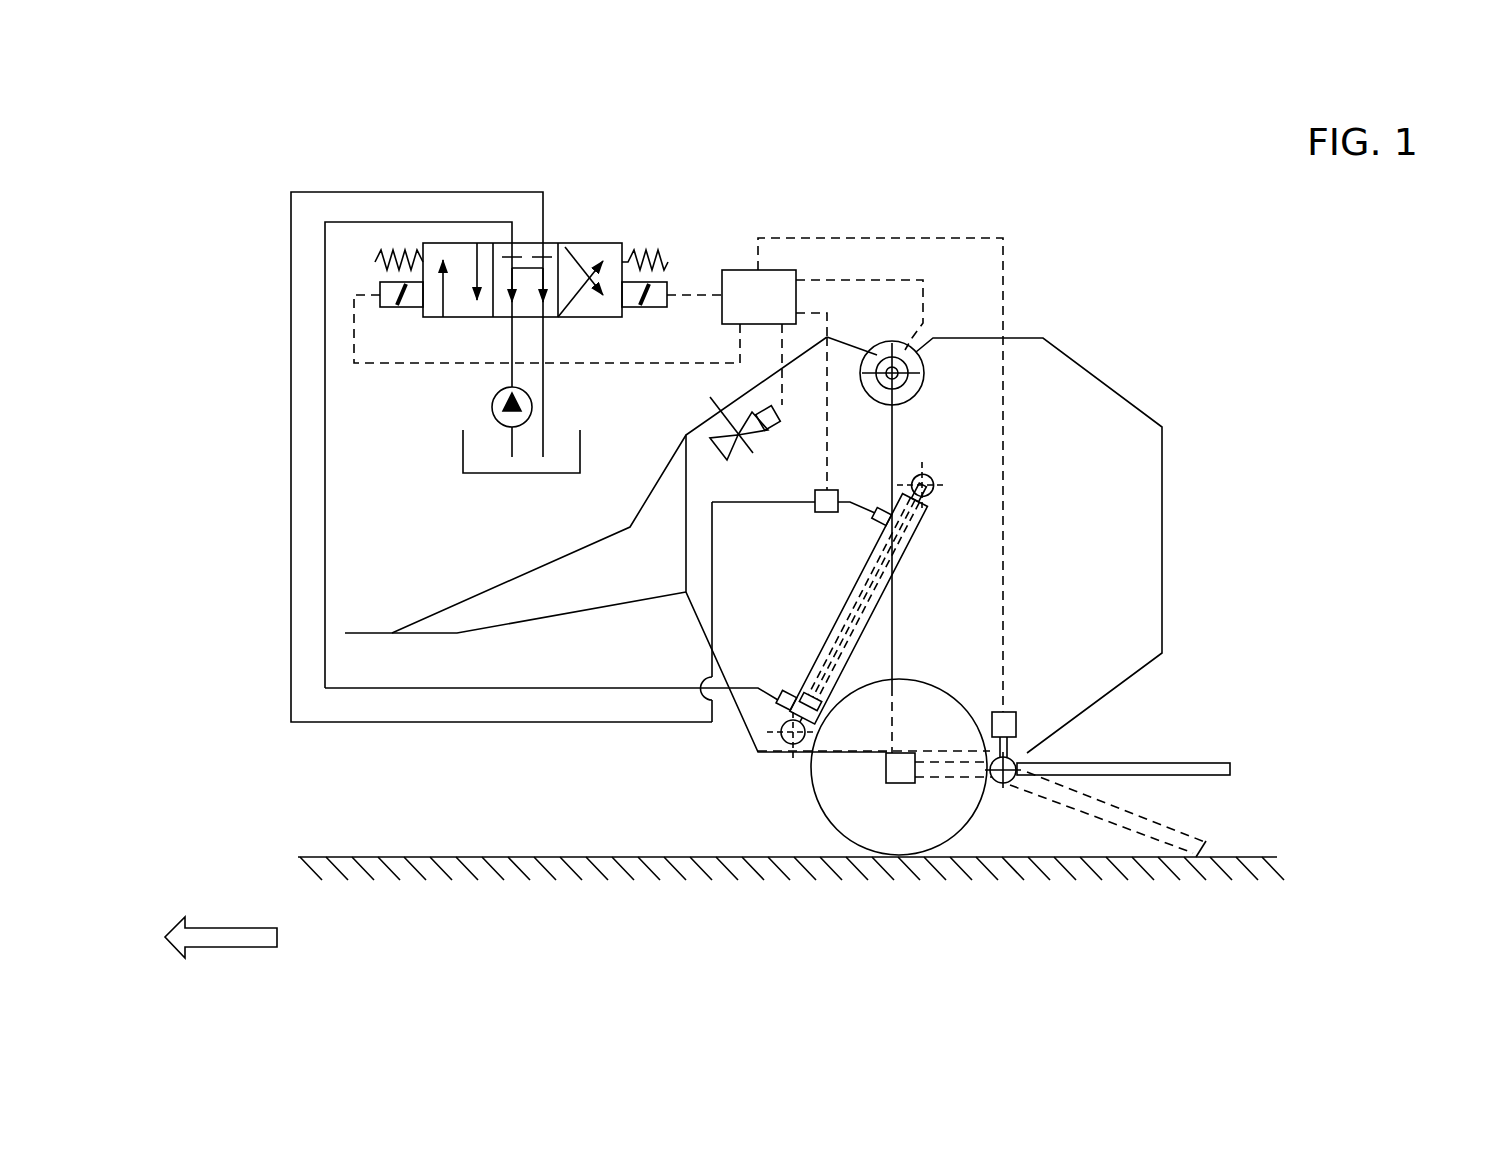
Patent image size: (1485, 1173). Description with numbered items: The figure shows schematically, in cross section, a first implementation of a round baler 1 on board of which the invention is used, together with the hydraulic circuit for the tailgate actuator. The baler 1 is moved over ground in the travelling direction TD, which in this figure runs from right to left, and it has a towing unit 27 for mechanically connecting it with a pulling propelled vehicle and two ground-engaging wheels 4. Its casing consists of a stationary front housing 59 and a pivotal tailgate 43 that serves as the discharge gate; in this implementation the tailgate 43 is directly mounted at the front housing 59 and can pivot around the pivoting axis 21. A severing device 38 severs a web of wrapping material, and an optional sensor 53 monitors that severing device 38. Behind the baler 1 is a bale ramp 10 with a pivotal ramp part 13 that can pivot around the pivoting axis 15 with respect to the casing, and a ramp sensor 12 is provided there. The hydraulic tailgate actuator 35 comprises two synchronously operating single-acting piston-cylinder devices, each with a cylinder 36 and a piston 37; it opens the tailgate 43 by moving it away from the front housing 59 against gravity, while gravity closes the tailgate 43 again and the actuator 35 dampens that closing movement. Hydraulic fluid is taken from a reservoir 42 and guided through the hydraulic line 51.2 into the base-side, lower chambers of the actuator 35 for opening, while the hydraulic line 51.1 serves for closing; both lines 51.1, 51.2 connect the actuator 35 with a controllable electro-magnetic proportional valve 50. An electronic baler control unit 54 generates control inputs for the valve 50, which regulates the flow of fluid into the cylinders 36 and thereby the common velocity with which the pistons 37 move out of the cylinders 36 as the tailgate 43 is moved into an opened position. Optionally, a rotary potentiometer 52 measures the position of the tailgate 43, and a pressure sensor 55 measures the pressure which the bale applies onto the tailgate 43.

The round baler 1 is at (769, 424).
The ground-engaging wheels 4 is at (913, 806).
The bale ramp 10 is at (1264, 785).
The ramp sensor 12 is at (1004, 724).
The pivotal ramp part 13 is at (1162, 756).
The pivoting axis 15 is at (1004, 789).
The pivoting axis 21 is at (892, 373).
The towing unit 27 is at (542, 603).
The hydraulic tailgate actuator 35 is at (947, 595).
The cylinder 36 is at (857, 633).
The piston 37 is at (903, 528).
The severing device 38 is at (721, 448).
The reservoir 42 is at (497, 473).
The tailgate 43 is at (1090, 365).
The electro-magnetic 3/3 proportional valve 50 is at (565, 243).
The hydraulic line 51.1 is at (425, 688).
The hydraulic line 51.2 is at (520, 722).
The rotary potentiometer 52 is at (877, 355).
The sensor 53 is at (768, 418).
The electronic baler control unit 54 is at (750, 290).
The pressure sensor 55 is at (828, 505).
The stationary front housing 59 is at (763, 712).
The travelling direction TD is at (231, 928).